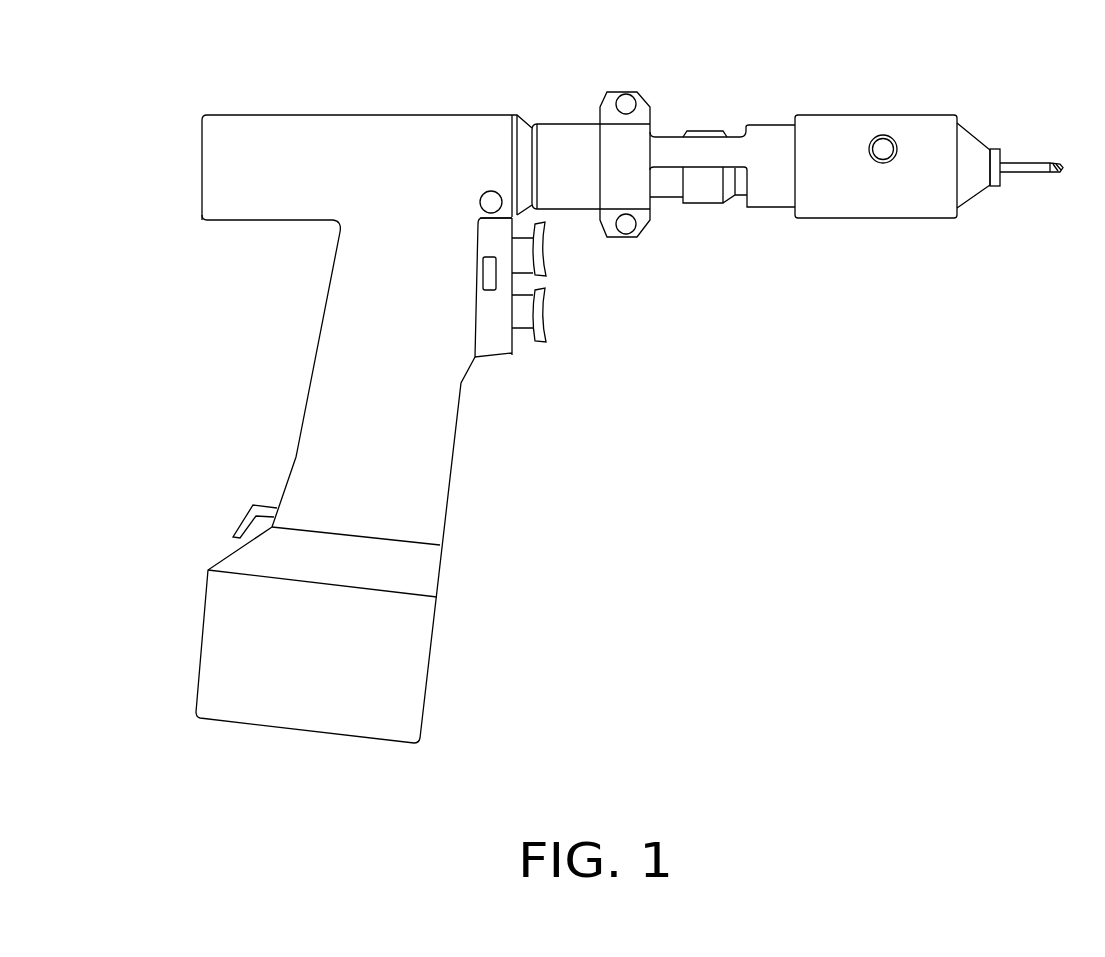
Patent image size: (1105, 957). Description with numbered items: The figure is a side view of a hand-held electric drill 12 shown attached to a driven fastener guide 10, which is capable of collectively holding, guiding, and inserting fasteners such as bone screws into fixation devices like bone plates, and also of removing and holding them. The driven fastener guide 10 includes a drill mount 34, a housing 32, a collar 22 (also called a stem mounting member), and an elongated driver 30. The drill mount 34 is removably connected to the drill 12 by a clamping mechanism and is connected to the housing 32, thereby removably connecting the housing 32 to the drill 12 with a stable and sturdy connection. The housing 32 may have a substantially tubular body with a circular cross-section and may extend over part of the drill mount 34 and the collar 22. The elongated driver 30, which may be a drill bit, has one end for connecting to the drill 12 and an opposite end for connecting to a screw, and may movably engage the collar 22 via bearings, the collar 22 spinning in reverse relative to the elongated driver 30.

The driven fastener guide 10 is at (644, 372).
The electric drill 12 is at (298, 324).
The collar 22 is at (982, 142).
The elongated driver 30 is at (1037, 169).
The housing 32 is at (842, 210).
The drill mount 34 is at (770, 205).